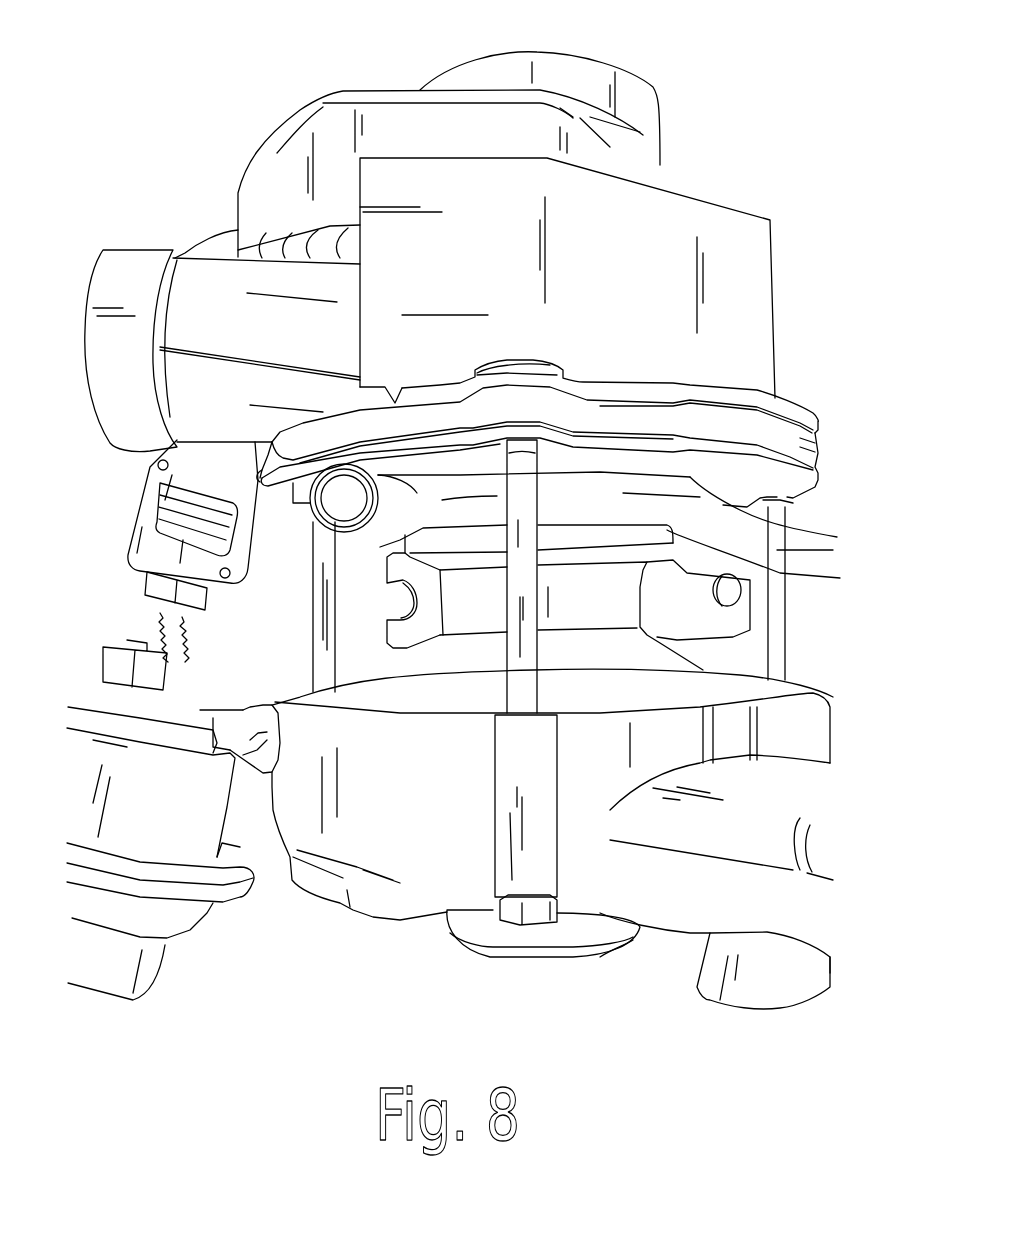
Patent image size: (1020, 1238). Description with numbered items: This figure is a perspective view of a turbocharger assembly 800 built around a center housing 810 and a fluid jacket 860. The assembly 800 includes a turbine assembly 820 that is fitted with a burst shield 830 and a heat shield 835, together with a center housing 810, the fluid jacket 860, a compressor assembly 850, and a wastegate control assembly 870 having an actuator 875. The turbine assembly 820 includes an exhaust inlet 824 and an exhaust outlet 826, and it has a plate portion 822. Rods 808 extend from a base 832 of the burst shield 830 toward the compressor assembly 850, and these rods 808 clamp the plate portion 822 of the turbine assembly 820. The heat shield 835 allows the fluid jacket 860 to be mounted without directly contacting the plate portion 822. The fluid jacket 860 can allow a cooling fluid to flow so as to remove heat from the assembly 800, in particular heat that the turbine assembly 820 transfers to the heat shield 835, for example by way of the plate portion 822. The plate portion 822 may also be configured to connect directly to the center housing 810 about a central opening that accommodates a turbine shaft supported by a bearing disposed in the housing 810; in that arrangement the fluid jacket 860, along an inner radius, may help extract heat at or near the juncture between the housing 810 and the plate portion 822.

The assembly 800 is at (375, 37).
The turbine assembly 820 is at (283, 108).
The exhaust inlet 824 is at (95, 437).
The exhaust outlet 826 is at (593, 53).
The burst shield 830 is at (788, 281).
The base 832 is at (823, 415).
The plate portion 822 is at (818, 443).
The heat shield 835 is at (828, 482).
The fluid jacket 860 is at (569, 509).
The center housing 810 is at (580, 614).
The rods 808 is at (317, 660).
The wastegate control assembly 870 is at (224, 626).
The compressor assembly 850 is at (394, 801).
The actuator 875 is at (216, 960).